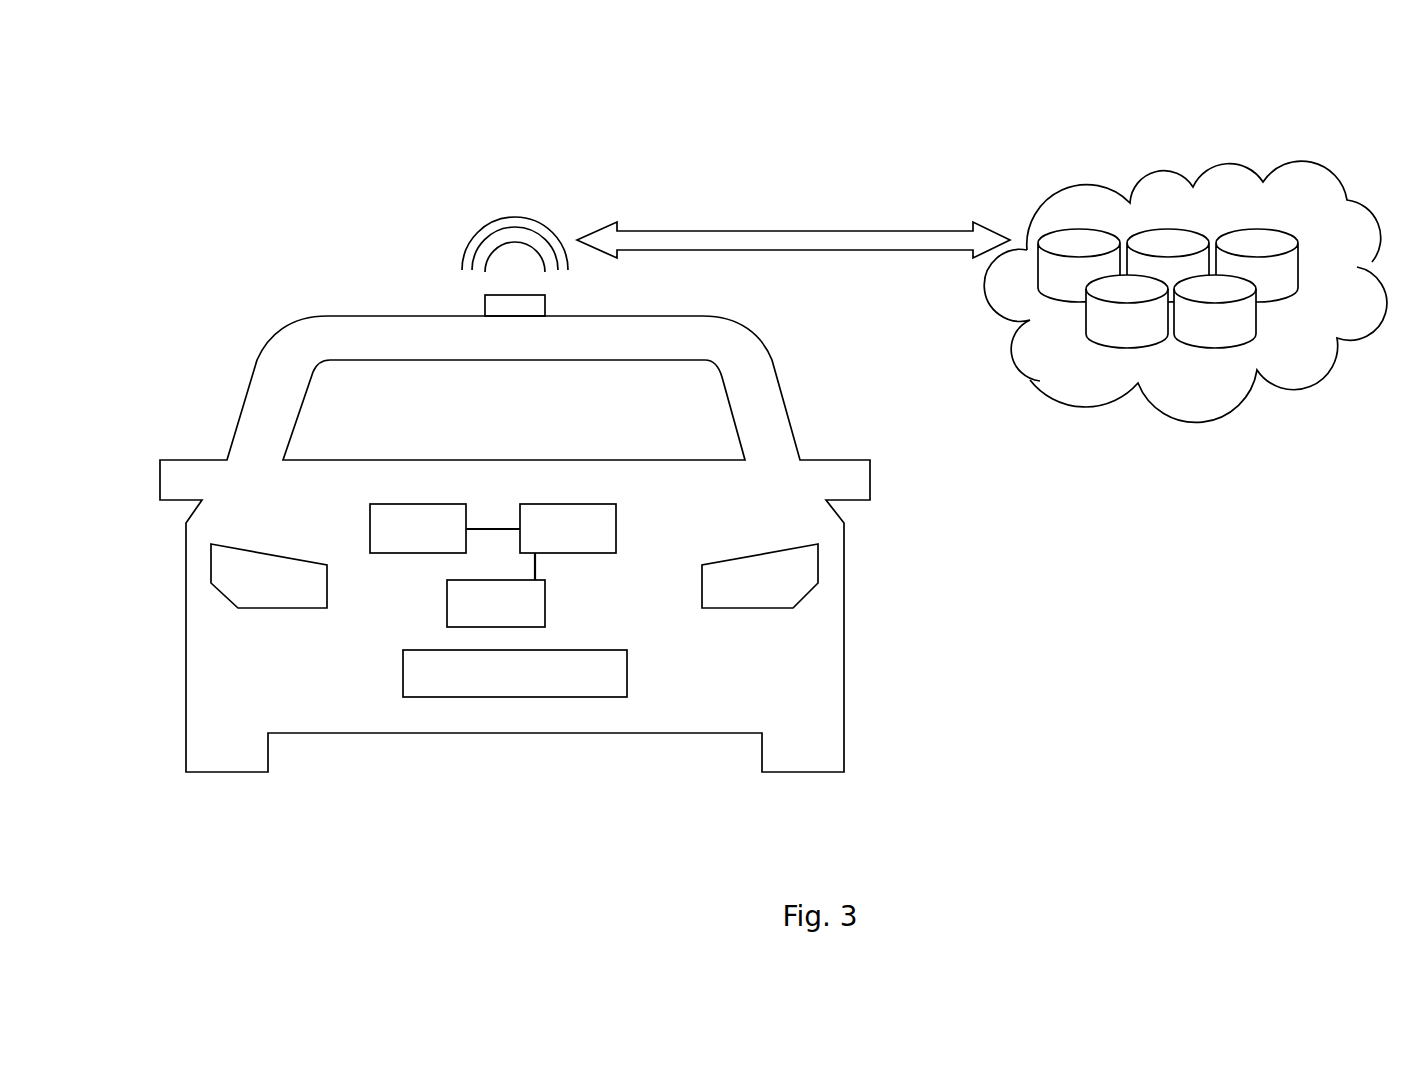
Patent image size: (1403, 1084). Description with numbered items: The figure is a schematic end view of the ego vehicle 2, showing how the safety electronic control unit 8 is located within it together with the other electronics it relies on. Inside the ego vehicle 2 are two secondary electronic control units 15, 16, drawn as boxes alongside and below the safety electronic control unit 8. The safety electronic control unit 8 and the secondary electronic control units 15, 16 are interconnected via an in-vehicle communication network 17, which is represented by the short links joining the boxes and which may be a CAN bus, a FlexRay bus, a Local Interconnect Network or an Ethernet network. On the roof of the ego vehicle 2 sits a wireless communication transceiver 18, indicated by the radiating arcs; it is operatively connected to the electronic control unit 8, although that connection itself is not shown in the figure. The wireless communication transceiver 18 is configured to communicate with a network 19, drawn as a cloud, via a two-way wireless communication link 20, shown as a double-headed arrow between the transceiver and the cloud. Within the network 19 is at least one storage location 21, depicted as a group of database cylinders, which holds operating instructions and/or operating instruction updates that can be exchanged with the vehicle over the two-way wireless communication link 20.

The ego vehicle 2 is at (802, 660).
The safety electronic control unit 8 is at (412, 522).
The secondary electronic control unit 15 is at (597, 537).
The secondary electronic control unit 16 is at (502, 600).
The in-vehicle communication network 17 is at (497, 529).
The wireless communication transceiver 18 is at (511, 195).
The network 19 is at (1200, 393).
The two-way wireless communication link 20 is at (793, 231).
The storage location 21 is at (1166, 226).